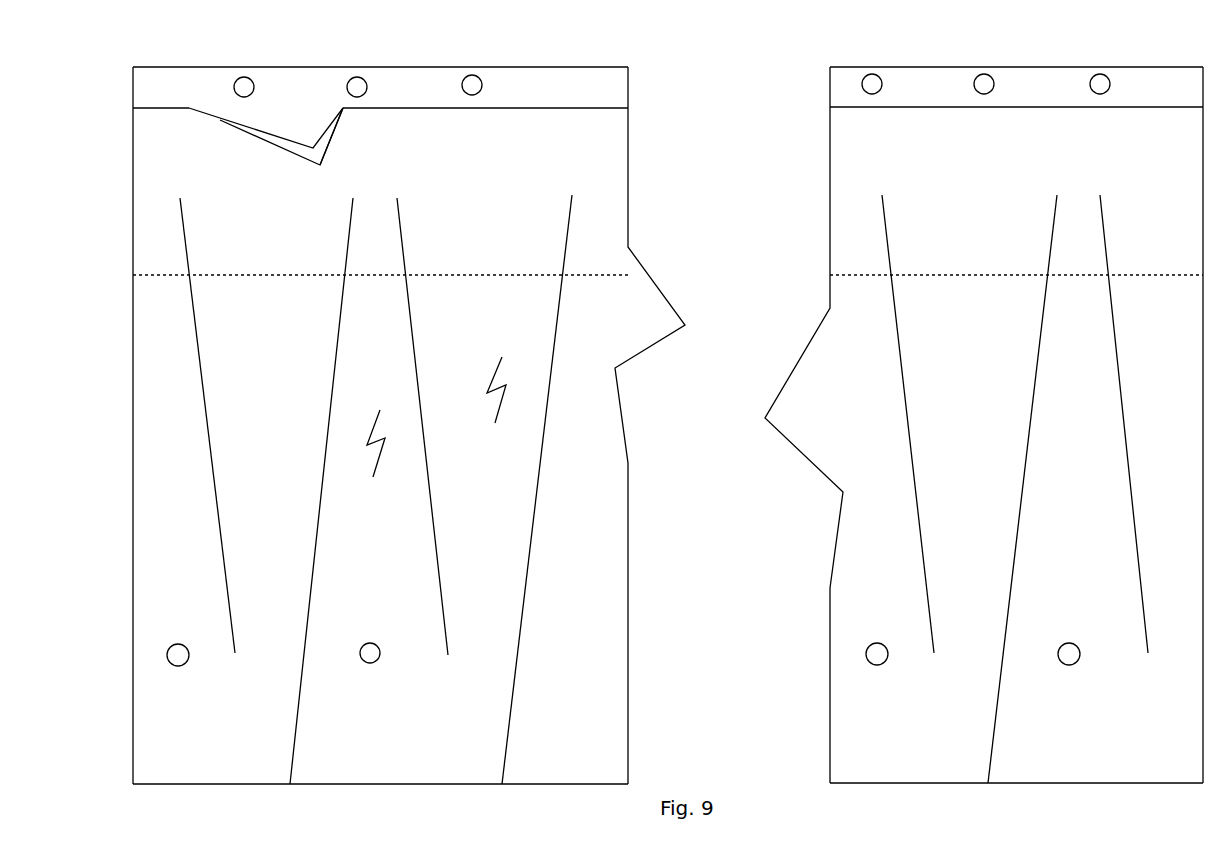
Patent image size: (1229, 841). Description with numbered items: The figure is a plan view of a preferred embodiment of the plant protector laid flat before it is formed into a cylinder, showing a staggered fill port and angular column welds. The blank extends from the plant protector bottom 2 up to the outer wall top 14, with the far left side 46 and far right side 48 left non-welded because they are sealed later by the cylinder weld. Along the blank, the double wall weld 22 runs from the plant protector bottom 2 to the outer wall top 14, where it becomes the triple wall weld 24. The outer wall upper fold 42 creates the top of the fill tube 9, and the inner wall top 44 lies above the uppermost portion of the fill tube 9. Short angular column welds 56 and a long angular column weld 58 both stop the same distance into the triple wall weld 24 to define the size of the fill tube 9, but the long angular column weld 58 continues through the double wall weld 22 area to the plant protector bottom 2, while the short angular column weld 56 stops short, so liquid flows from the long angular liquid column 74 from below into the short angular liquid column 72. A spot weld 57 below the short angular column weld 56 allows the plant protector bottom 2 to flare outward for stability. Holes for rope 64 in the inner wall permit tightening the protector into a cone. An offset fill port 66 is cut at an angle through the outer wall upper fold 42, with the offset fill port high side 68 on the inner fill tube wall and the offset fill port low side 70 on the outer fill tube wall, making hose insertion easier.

The plant protector bottom 2 is at (409, 428).
The fill tube 9 is at (460, 192).
The outer wall top 14 is at (417, 277).
The double wall weld 22 is at (221, 425).
The triple wall weld 24 is at (185, 241).
The outer wall upper fold 42 is at (502, 108).
The inner wall top 44 is at (984, 401).
The far left side 46 is at (133, 410).
The far right side 48 is at (1203, 407).
The short angular column weld 56 is at (902, 360).
The spot weld 57 is at (378, 663).
The long angular column weld 58 is at (1040, 308).
The holes for rope 64 is at (351, 79).
The offset fill port 66 is at (333, 135).
The offset fill port high side 68 is at (277, 137).
The offset fill port low side 70 is at (288, 152).
The short angular liquid column 72 is at (384, 431).
The long angular liquid column 74 is at (501, 376).